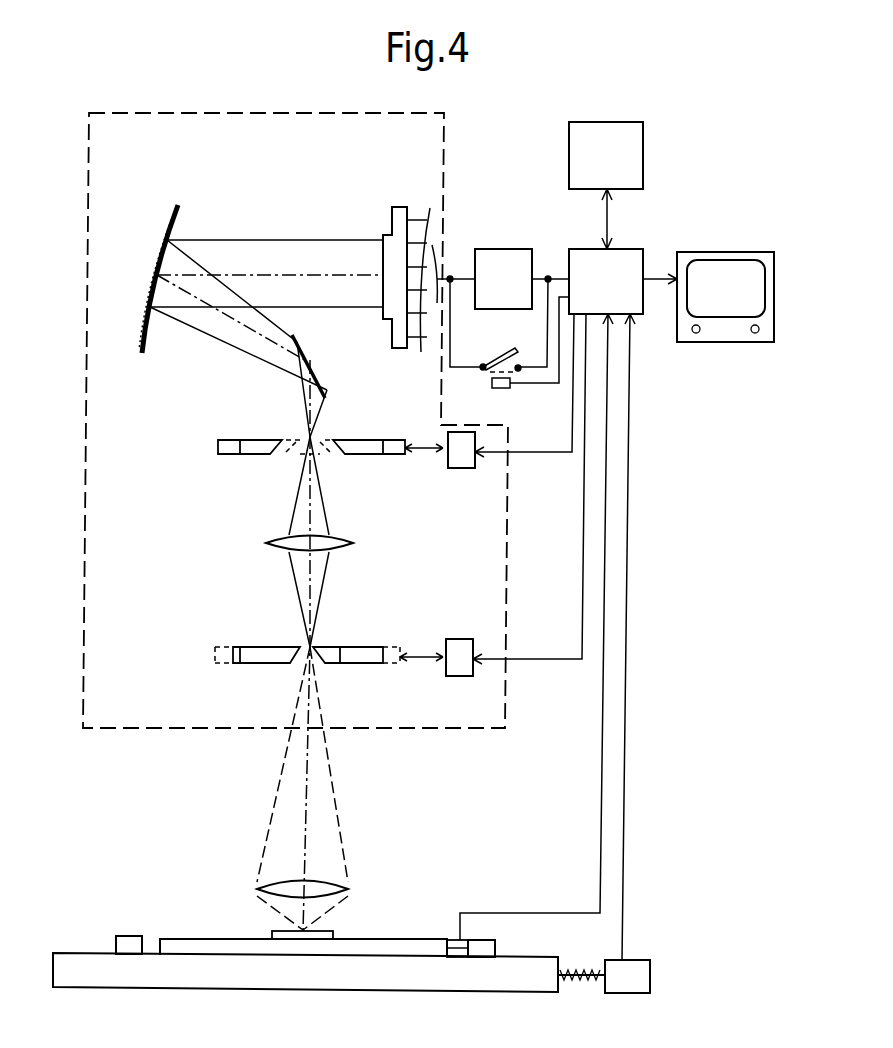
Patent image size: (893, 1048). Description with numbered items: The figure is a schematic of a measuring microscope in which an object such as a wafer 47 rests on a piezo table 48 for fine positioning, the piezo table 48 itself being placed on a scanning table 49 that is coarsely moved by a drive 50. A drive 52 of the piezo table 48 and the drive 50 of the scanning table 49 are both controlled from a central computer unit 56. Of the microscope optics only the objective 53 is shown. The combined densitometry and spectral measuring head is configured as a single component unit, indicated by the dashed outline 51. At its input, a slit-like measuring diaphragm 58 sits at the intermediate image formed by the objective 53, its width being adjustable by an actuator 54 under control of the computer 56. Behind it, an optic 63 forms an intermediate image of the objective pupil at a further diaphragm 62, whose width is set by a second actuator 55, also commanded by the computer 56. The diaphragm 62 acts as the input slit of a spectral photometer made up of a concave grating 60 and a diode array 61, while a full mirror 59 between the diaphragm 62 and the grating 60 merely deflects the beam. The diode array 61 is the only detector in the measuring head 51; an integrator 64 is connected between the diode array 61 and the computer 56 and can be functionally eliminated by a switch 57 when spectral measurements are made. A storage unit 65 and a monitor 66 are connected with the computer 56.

The wafer 47 is at (330, 934).
The piezo table 48 is at (435, 947).
The scanning table 49 is at (542, 983).
The drive 50 is at (633, 983).
The outline 51 is at (445, 137).
The drive 52 is at (458, 958).
The objective 53 is at (345, 892).
The actuator 54 is at (455, 670).
The second actuator 55 is at (455, 462).
The central computer unit 56 is at (643, 300).
The switch 57 is at (517, 360).
The measuring diaphragm 58 is at (225, 660).
The full mirror 59 is at (330, 384).
The concave grating 60 is at (145, 345).
The diode array 61 is at (400, 228).
The diaphragm 62 is at (244, 444).
The optic 63 is at (348, 545).
The integrator 64 is at (497, 250).
The storage unit 65 is at (643, 146).
The monitor 66 is at (700, 256).